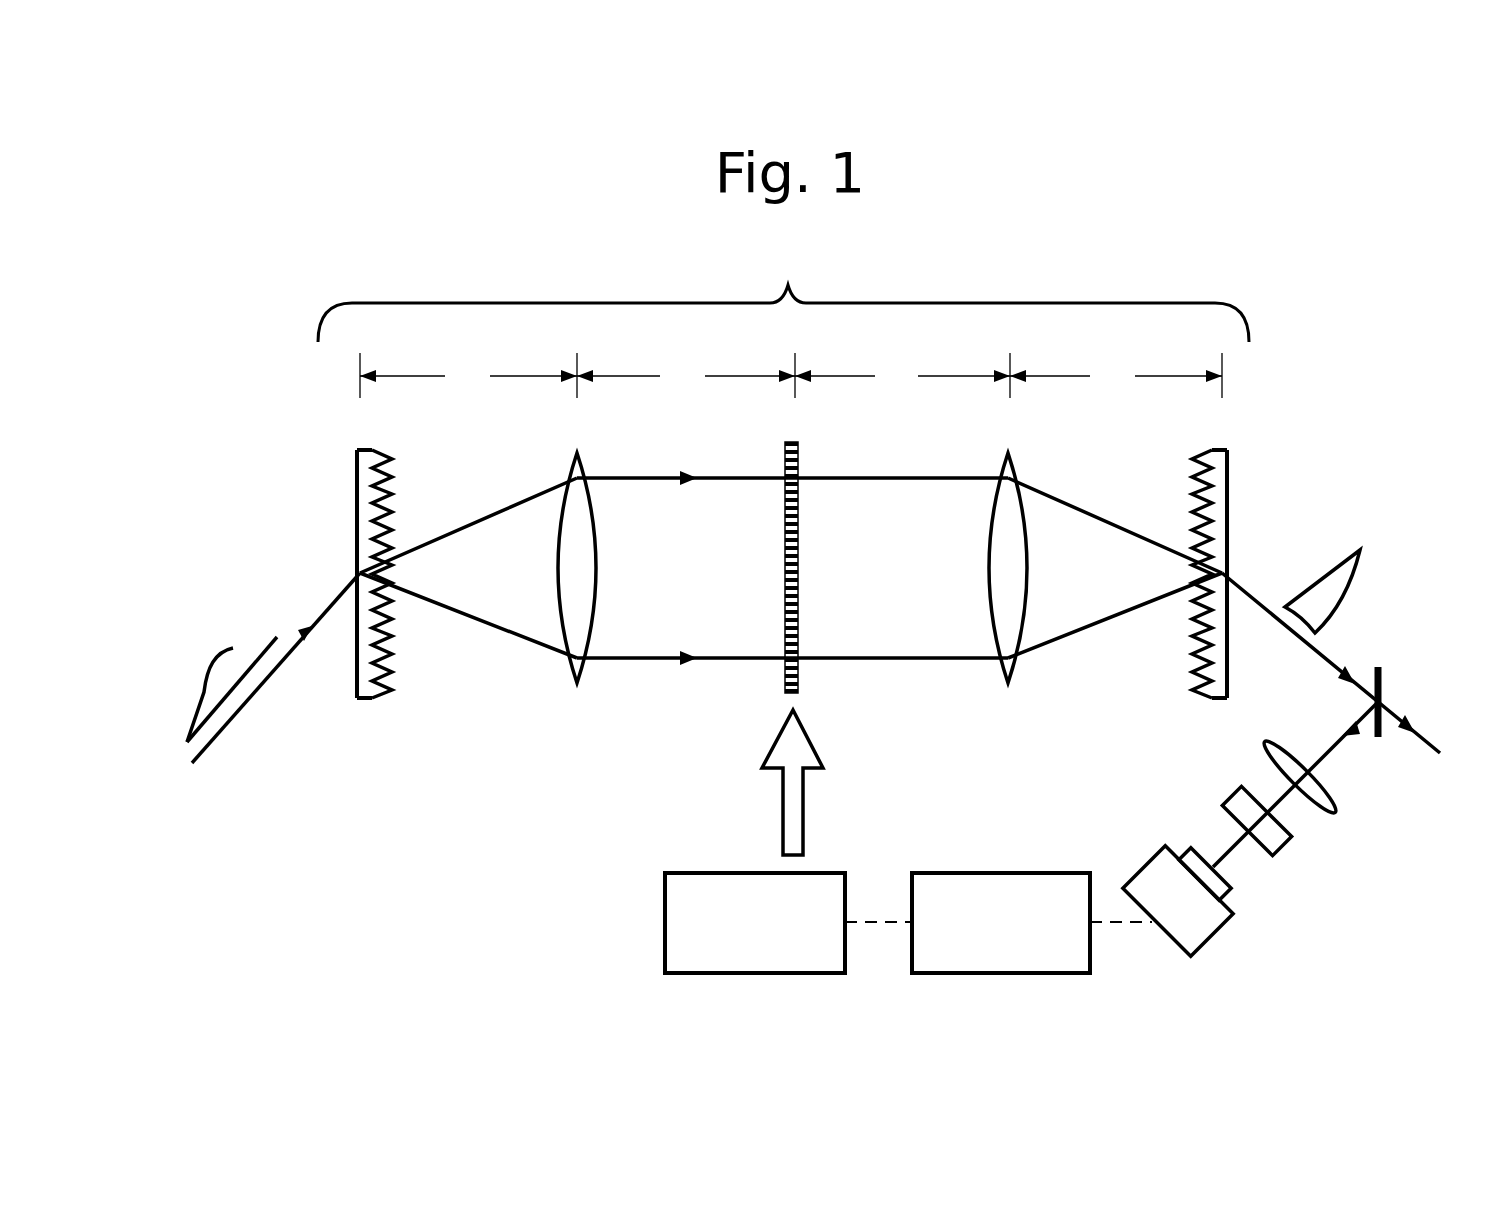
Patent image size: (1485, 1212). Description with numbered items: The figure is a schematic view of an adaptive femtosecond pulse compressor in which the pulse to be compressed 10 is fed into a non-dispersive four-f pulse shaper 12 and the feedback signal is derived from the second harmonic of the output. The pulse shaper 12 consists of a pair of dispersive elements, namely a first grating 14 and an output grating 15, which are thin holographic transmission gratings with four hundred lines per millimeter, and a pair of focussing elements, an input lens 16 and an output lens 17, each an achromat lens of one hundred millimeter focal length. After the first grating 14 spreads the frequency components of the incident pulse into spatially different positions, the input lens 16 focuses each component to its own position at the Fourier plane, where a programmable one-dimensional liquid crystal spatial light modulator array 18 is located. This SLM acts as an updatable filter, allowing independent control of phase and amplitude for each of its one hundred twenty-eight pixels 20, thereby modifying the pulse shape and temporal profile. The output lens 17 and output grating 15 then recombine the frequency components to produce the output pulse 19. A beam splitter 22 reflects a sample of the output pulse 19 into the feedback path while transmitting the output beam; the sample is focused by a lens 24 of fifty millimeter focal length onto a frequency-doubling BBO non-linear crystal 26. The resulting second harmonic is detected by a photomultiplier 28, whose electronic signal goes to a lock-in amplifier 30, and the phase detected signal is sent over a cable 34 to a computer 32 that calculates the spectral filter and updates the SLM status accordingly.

The pulse to be compressed 10 is at (233, 648).
The non-dispersive 4-f pulse shaper 12 is at (783, 320).
The first grating 14 is at (352, 498).
The output grating 15 is at (1237, 497).
The input lens 16 is at (565, 668).
The output lens 17 is at (970, 668).
The spatial light modulator array 18 is at (790, 435).
The output pulse 19 is at (1333, 560).
The pixels 20 is at (799, 555).
The beam splitter 22 is at (1387, 682).
The lens 24 is at (1332, 813).
The frequency-doubling BBO non-linear crystal 26 is at (1290, 850).
The photomultiplier 28 is at (1238, 917).
The lock-in amplifier 30 is at (1068, 872).
The computer 32 is at (660, 905).
The cable 34 is at (768, 790).